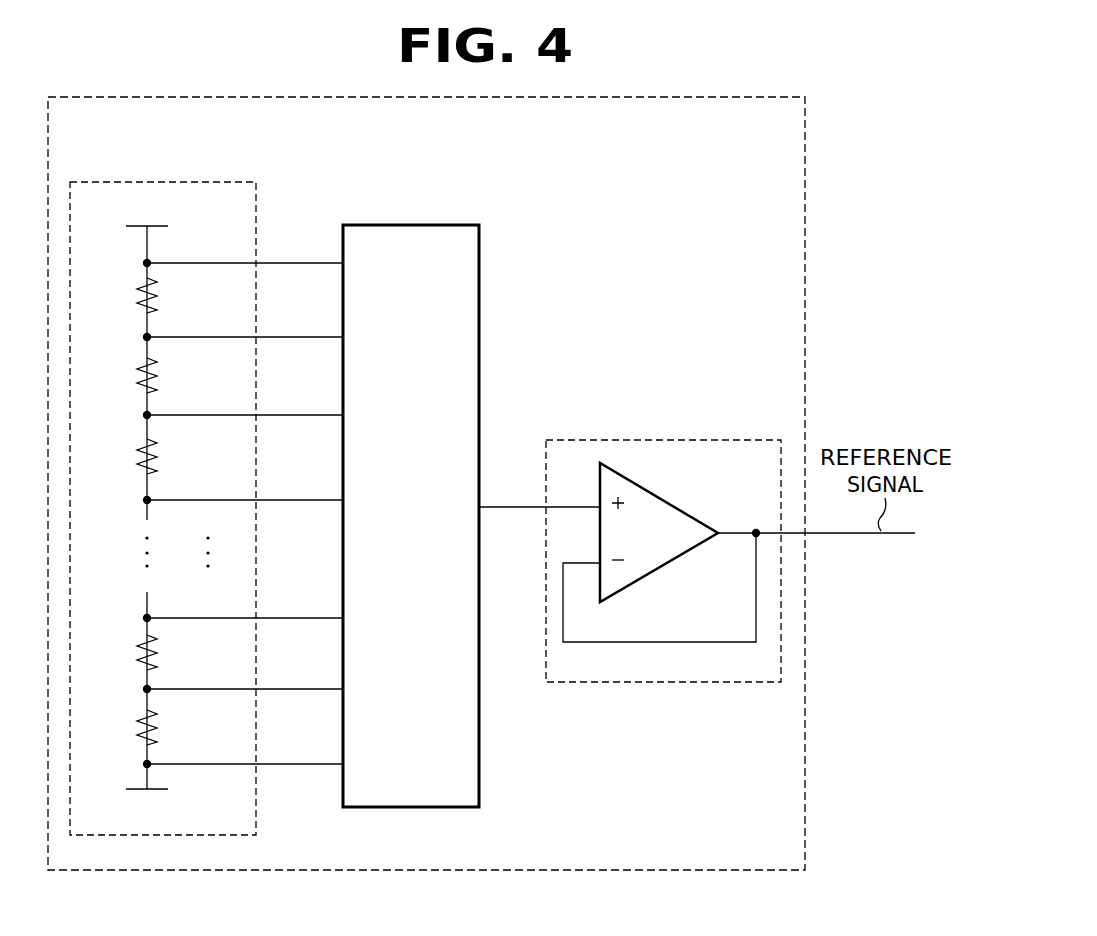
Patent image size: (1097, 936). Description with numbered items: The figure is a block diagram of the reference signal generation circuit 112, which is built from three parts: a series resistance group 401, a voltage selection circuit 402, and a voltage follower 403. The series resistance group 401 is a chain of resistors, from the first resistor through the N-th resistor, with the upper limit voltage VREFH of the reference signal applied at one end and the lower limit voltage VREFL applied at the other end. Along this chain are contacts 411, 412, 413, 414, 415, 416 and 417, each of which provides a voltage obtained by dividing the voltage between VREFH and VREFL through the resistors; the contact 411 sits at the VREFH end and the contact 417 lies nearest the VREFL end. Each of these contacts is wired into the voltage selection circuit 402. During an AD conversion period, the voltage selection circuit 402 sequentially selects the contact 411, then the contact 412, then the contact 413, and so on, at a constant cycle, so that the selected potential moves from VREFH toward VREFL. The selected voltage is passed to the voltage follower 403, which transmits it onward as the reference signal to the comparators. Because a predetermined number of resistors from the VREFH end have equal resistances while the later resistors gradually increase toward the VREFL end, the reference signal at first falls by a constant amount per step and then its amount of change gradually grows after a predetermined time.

The reference signal generation circuit 112 is at (104, 96).
The series resistance group 401 is at (213, 181).
The voltage selection circuit 402 is at (410, 223).
The voltage follower 403 is at (703, 439).
The contact 411 is at (150, 262).
The contact 412 is at (150, 336).
The contact 413 is at (150, 414).
The contact 414 is at (150, 499).
The contact 415 is at (150, 617).
The contact 416 is at (150, 688).
The contact 417 is at (150, 763).